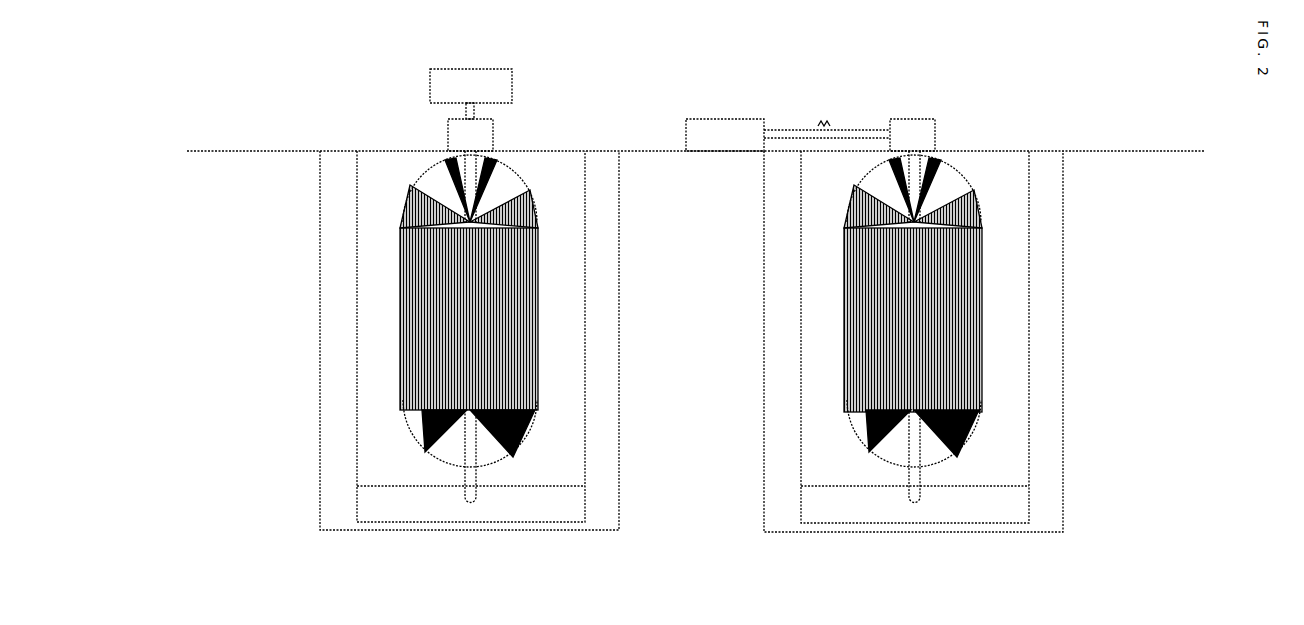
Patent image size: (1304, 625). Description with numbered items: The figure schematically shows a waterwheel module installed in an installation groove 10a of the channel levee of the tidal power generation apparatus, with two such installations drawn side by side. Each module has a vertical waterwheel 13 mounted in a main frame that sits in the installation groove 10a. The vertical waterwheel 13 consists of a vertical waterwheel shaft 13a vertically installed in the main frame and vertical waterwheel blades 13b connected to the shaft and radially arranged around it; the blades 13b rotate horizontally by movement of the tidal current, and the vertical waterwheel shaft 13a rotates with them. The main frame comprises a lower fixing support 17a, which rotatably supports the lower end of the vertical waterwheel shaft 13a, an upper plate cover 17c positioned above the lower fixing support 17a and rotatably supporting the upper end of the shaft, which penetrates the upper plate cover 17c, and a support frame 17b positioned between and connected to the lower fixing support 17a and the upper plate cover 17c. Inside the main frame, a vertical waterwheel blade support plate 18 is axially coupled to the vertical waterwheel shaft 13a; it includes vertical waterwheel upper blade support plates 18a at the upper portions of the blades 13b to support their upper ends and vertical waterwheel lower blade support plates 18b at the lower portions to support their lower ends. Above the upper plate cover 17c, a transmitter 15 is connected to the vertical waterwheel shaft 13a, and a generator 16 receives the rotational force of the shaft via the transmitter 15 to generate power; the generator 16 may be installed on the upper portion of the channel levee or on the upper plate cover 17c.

The installation groove 10a is at (320, 262).
The vertical waterwheel 13 is at (694, 329).
The vertical waterwheel shaft 13a is at (455, 470).
The vertical waterwheel blades 13b is at (694, 311).
The transmitter 15 is at (486, 132).
The generator 16 is at (500, 82).
The lower fixing support 17a is at (372, 507).
The support frame 17b is at (357, 358).
The upper plate cover 17c is at (367, 151).
The vertical waterwheel blade support plate 18 is at (691, 311).
The vertical waterwheel upper blade support plates 18a is at (878, 185).
The vertical waterwheel lower blade support plates 18b is at (692, 433).